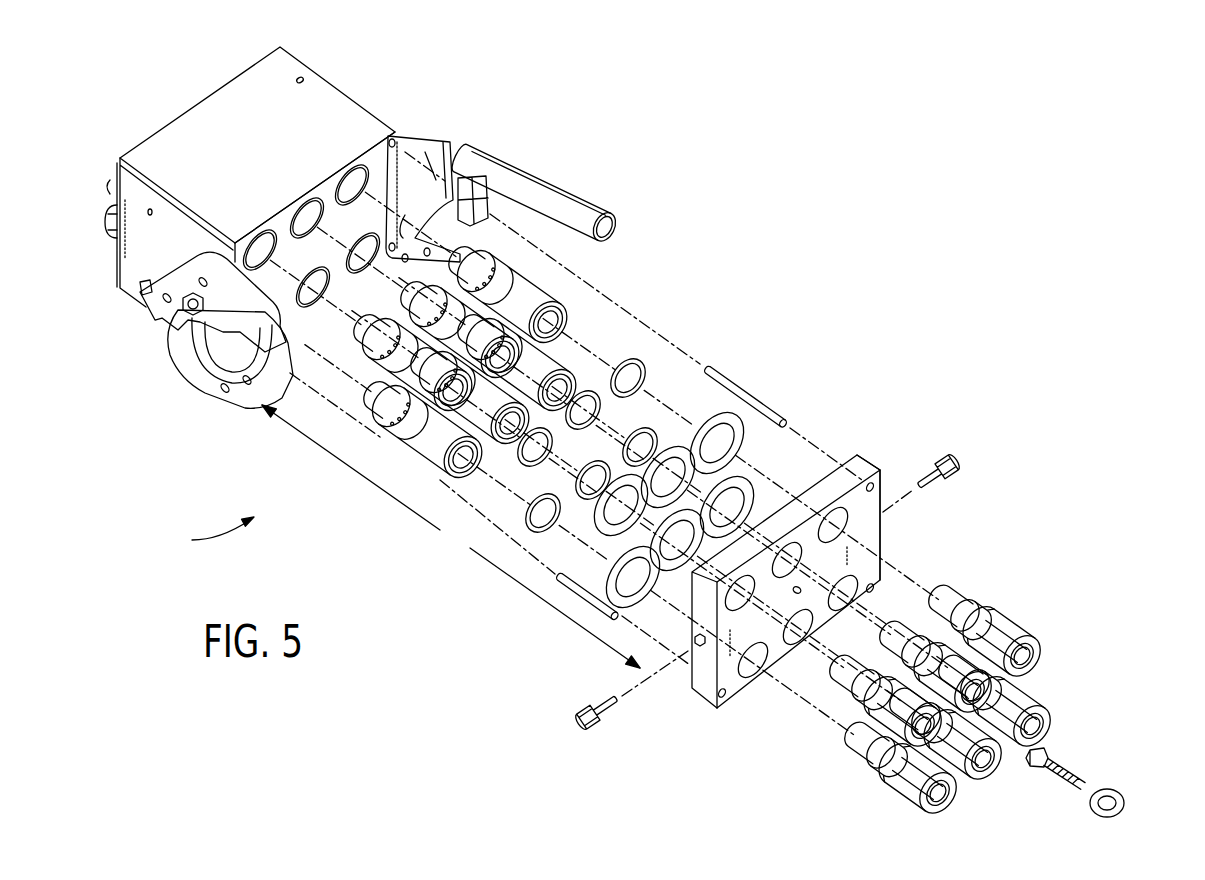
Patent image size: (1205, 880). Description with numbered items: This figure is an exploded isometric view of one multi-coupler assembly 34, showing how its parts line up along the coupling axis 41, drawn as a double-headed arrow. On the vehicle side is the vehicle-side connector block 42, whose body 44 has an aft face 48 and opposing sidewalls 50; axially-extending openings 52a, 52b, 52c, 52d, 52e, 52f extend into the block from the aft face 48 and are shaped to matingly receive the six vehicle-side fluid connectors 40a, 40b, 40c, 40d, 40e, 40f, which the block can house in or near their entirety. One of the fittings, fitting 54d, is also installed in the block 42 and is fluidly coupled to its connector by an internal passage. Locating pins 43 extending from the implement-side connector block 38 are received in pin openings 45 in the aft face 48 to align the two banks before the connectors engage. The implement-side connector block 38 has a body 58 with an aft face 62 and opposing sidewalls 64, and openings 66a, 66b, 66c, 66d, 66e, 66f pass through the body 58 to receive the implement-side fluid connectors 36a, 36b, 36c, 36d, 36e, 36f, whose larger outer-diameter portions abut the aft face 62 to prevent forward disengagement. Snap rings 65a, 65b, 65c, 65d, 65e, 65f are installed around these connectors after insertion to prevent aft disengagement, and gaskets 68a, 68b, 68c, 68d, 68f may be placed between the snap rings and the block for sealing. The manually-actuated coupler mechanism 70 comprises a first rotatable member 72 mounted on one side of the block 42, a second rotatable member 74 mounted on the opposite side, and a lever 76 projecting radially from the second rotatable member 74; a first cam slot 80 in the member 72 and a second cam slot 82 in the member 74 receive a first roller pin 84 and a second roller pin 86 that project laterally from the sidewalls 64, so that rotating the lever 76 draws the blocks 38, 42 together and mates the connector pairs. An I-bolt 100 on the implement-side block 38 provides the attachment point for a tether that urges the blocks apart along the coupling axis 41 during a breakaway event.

The multi-coupler assembly 34 is at (208, 537).
The fluid connector 36a is at (846, 678).
The fluid connector 36b is at (903, 622).
The fluid connector 36c is at (945, 590).
The fluid connector 36d is at (930, 807).
The fluid connector 36e is at (970, 774).
The fluid connector 36f is at (1050, 720).
The implement-side connector block 38 is at (864, 462).
The fluid connector 40a is at (373, 352).
The fluid connector 40b is at (416, 307).
The fluid connector 40c is at (533, 300).
The fluid connector 40d is at (437, 462).
The fluid connector 40e is at (560, 435).
The fluid connector 40f is at (547, 355).
The coupling axis 41 is at (451, 536).
The vehicle-side connector block 42 is at (336, 82).
The locating pins 43 is at (748, 396).
The body 44 is at (192, 147).
The pin openings 45 is at (380, 172).
The aft face 48 is at (327, 193).
The sidewalls 50 is at (117, 187).
The opening 52a is at (258, 237).
The opening 52b is at (307, 200).
The opening 52c is at (352, 163).
The opening 52d is at (303, 322).
The opening 52e is at (308, 275).
The opening 52f is at (410, 222).
The fitting 54d is at (108, 223).
The body 58 is at (727, 562).
The aft face 62 is at (873, 540).
The sidewalls 64 is at (690, 648).
The snap ring 65a is at (517, 457).
The snap ring 65b is at (635, 360).
The snap ring 65c is at (590, 398).
The snap ring 65d is at (525, 525).
The snap ring 65e is at (577, 483).
The snap ring 65f is at (650, 430).
The opening 66a is at (738, 608).
The opening 66b is at (838, 508).
The opening 66c is at (847, 463).
The opening 66d is at (750, 675).
The opening 66e is at (798, 645).
The opening 66f is at (860, 583).
The gasket 68a is at (585, 535).
The gasket 68b is at (673, 445).
The gasket 68c is at (735, 420).
The gasket 68d is at (610, 647).
The gasket 68f is at (793, 527).
The coupler mechanism 70 is at (218, 401).
The first rotatable member 72 is at (178, 283).
The second rotatable member 74 is at (433, 140).
The lever 76 is at (590, 217).
The first cam slot 80 is at (210, 355).
The second cam slot 82 is at (437, 262).
The first roller pin 84 is at (600, 727).
The second roller pin 86 is at (940, 482).
The I-bolt 100 is at (1122, 793).